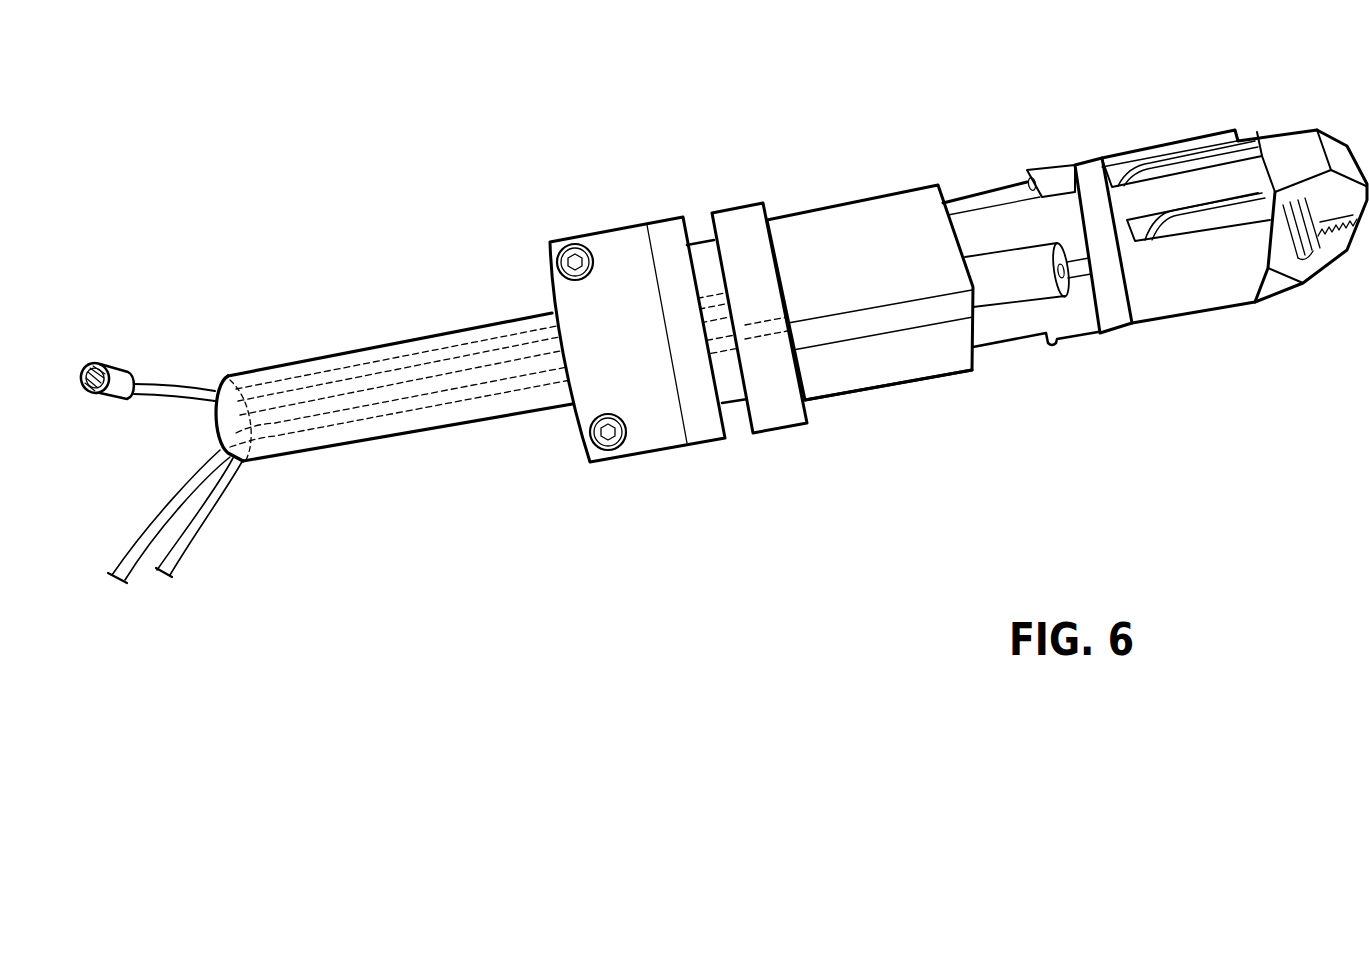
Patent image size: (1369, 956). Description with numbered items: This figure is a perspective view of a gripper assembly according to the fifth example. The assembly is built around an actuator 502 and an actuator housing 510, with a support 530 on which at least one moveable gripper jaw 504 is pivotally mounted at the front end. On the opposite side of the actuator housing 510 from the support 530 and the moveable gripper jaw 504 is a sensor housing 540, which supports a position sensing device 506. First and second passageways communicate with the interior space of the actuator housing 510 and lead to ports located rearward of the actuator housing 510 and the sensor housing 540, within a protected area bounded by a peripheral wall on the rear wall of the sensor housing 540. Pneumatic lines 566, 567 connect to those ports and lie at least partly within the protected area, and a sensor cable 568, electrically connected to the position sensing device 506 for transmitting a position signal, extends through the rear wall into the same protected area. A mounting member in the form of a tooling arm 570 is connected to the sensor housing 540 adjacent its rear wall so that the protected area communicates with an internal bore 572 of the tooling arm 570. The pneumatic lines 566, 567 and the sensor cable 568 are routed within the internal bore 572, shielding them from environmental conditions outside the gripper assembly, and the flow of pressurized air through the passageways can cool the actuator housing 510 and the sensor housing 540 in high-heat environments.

The actuator 502 is at (978, 186).
The moveable gripper jaw 504 is at (1302, 130).
The position sensing device 506 is at (846, 196).
The actuator housing 510 is at (1043, 168).
The support 530 is at (1092, 157).
The sensor housing 540 is at (912, 385).
The pneumatic line 566 is at (180, 547).
The pneumatic line 567 is at (143, 538).
The sensor cable 568 is at (85, 363).
The tooling arm 570 is at (277, 368).
The internal bore 572 is at (213, 390).